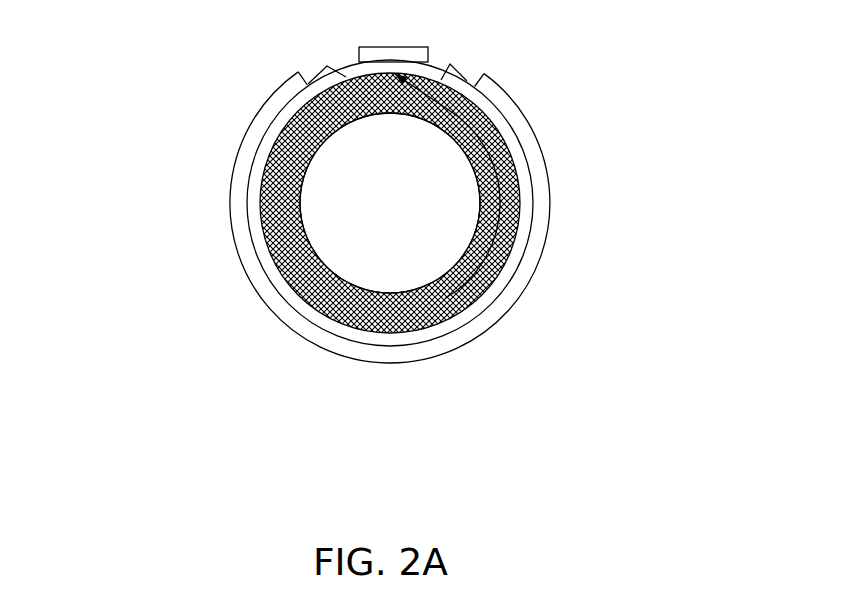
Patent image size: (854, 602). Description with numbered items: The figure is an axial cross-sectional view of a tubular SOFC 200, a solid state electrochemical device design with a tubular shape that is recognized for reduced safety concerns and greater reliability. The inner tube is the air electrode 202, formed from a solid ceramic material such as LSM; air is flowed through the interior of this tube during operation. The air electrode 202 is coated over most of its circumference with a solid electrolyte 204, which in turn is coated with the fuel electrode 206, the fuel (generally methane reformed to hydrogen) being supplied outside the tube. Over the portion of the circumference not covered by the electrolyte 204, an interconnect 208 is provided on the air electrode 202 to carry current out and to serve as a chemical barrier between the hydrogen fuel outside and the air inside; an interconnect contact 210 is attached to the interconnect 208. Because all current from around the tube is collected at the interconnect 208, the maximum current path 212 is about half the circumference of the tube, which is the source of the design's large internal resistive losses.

The tubular SOFC 200 is at (604, 132).
The air electrode 202 is at (312, 303).
The solid electrolyte 204 is at (302, 86).
The fuel electrode 206 is at (242, 264).
The interconnect 208 is at (450, 64).
The interconnect contact 210 is at (359, 54).
The maximum current path 212 is at (480, 277).